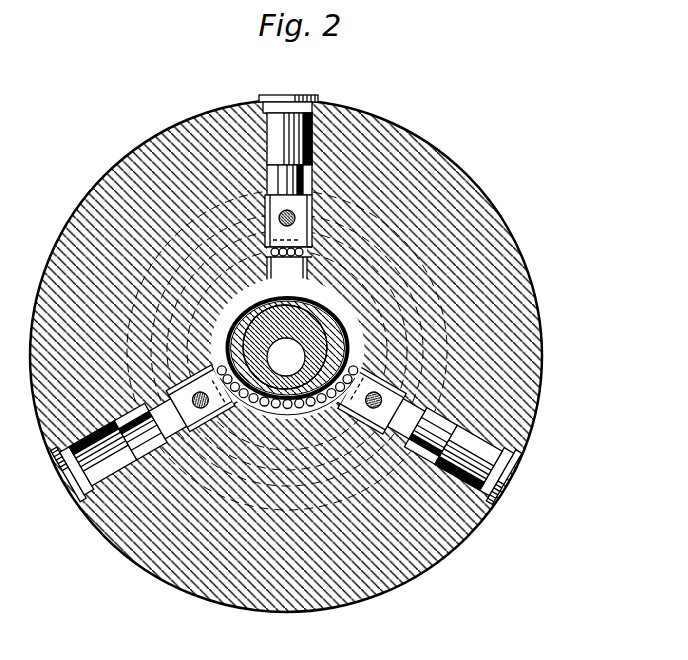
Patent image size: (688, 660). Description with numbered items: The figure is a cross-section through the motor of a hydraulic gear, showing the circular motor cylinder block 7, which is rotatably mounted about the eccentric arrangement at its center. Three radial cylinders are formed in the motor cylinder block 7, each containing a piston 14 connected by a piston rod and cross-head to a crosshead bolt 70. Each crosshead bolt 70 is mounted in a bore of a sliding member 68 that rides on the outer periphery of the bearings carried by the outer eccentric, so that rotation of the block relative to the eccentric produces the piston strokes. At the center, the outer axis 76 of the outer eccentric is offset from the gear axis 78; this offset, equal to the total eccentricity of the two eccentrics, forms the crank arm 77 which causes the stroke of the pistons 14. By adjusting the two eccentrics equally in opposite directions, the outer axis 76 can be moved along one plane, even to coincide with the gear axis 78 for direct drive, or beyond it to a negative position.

The motor cylinder block 7 is at (438, 185).
The piston 14 is at (329, 110).
The crosshead bolt 70 is at (360, 156).
The sliding member 68 is at (377, 217).
The outer axis of the outer eccentric 76 is at (287, 357).
The crank arm 77 is at (287, 345).
The gear axis 78 is at (287, 357).